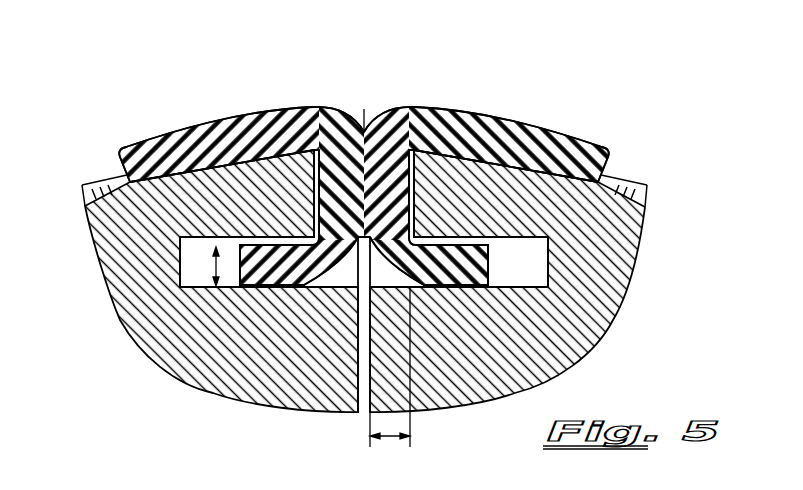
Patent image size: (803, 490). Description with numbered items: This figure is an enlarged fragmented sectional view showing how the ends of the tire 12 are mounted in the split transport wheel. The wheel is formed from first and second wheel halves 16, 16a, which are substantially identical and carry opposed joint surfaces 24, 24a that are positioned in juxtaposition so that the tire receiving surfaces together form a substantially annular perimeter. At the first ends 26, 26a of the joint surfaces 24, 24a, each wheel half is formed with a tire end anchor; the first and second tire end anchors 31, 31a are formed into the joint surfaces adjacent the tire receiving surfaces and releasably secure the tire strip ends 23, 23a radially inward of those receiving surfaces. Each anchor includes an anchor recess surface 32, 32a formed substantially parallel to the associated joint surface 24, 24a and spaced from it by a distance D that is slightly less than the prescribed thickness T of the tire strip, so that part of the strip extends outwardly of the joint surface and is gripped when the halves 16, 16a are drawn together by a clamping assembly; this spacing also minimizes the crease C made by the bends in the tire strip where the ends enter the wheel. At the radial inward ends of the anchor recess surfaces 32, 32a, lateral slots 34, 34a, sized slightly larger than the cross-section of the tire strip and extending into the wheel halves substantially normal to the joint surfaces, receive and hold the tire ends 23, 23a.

The tire 12 is at (560, 128).
The first wheel half 16 is at (605, 258).
The second wheel half 16a is at (222, 366).
The tire strip end 23 is at (492, 265).
The tire strip end 23a is at (240, 262).
The joint surface 24 is at (358, 402).
The joint surface 24a is at (356, 338).
The first end of joint surface 26 is at (410, 107).
The first end of joint surface 26a is at (317, 107).
The first tire end anchor 31 is at (432, 168).
The second tire end anchor 31a is at (293, 172).
The anchor recess surface 32 is at (390, 150).
The anchor recess surface 32a is at (336, 150).
The lateral slot 34 is at (543, 279).
The lateral slot 34a is at (195, 245).
The crease C is at (365, 109).
The tire strip thickness T is at (213, 266).
The distance D is at (390, 439).